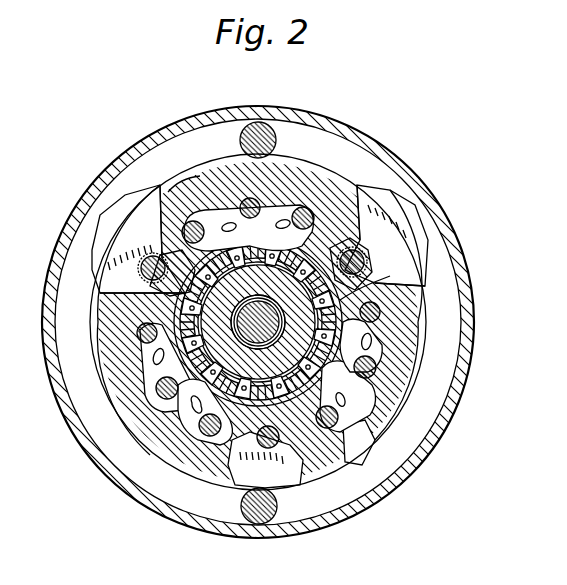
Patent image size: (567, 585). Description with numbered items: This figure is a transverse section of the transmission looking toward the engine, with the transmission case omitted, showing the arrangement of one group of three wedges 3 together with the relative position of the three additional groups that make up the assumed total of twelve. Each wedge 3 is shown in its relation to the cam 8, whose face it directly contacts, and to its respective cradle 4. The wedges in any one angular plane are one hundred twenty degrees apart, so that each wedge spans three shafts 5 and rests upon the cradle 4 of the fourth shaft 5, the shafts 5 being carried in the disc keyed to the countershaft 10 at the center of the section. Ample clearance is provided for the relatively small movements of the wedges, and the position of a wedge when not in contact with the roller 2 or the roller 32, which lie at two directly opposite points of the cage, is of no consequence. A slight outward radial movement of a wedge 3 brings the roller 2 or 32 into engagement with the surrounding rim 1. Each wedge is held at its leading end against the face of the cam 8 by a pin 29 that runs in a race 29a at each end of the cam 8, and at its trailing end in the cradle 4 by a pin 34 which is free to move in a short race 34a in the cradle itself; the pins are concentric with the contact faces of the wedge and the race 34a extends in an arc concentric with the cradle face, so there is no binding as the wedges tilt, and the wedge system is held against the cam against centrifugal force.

The rim 1 is at (347, 128).
The roller 2 is at (279, 120).
The wedge 3 is at (340, 203).
The cradle 4 is at (22, 279).
The shaft 5 is at (299, 168).
The cam 8 is at (296, 345).
The countershaft 10 is at (322, 324).
The pin 29 is at (362, 260).
The race 29a is at (300, 273).
The roller 32 is at (293, 537).
The pin 34 is at (163, 255).
The race 34a is at (197, 188).